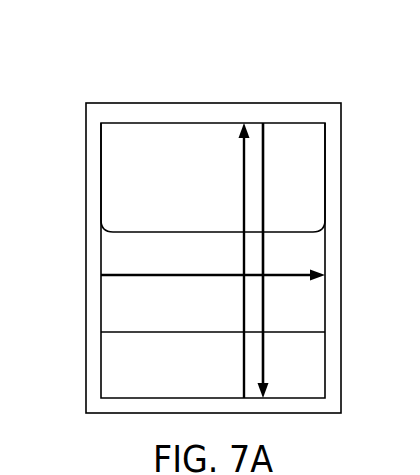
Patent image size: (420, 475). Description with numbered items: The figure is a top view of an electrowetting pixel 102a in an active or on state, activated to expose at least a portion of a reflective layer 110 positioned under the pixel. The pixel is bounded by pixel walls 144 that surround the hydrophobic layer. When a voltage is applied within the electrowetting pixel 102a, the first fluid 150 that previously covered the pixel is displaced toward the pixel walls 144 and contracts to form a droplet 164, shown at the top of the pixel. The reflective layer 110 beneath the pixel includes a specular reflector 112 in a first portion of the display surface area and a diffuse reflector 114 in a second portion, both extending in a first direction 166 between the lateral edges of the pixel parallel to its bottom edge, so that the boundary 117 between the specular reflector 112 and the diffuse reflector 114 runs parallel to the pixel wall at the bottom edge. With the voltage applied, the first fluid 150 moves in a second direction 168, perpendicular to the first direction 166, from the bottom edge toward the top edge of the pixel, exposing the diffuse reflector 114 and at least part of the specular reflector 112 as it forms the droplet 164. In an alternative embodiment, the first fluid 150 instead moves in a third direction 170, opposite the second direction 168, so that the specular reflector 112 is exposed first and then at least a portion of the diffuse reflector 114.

The electrowetting pixel 102a is at (277, 64).
The pixel walls 144 is at (158, 113).
The droplet 164 is at (118, 154).
The first fluid 150 is at (232, 188).
The first direction 166 is at (120, 280).
The boundary 117 is at (120, 334).
The second direction 168 is at (243, 220).
The third direction 170 is at (265, 205).
The specular reflector 112 is at (232, 306).
The diffuse reflector 114 is at (232, 376).
The reflective layer 110 is at (298, 306).